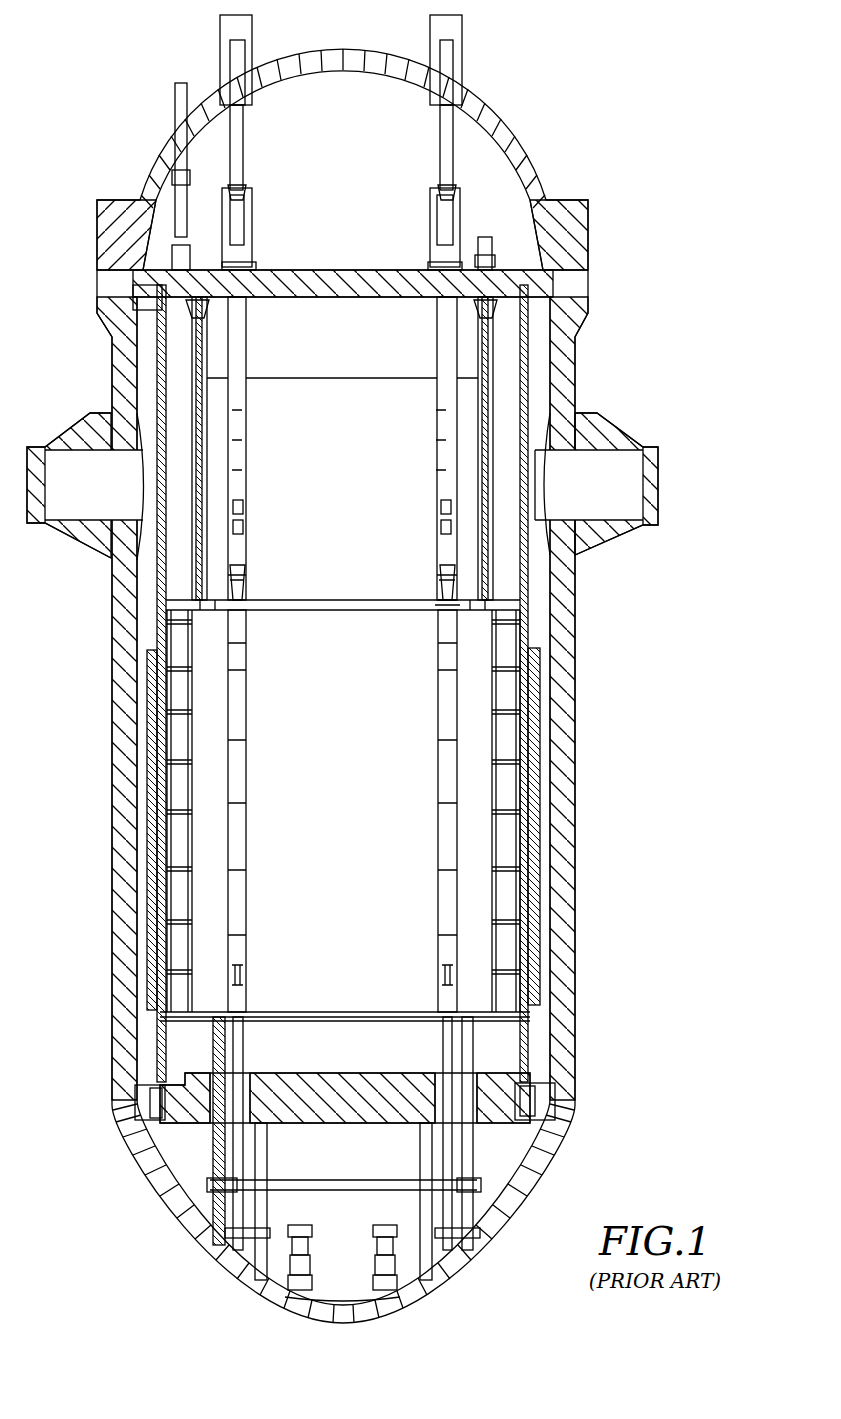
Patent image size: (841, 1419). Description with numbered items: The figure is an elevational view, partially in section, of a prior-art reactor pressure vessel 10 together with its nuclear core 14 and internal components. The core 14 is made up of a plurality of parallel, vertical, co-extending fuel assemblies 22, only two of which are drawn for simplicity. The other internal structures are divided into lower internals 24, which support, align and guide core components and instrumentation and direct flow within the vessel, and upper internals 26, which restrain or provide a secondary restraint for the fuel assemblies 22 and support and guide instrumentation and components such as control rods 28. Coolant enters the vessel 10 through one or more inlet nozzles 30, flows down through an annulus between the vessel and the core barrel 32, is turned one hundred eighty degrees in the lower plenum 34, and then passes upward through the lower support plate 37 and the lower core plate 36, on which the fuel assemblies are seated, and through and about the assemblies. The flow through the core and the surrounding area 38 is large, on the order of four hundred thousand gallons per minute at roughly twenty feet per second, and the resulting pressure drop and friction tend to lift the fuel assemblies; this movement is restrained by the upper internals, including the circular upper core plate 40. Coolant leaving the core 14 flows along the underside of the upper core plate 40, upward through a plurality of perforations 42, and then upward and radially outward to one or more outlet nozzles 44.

The reactor pressure vessel 10 is at (577, 677).
The nuclear core 14 is at (320, 797).
The fuel assemblies 22 is at (247, 697).
The lower internals 24 is at (315, 1054).
The upper internals 26 is at (322, 459).
The control rods 28 is at (436, 607).
The inlet nozzles 30 is at (72, 420).
The core barrel 32 is at (152, 600).
The lower plenum 34 is at (510, 1173).
The lower core plate 36 is at (397, 1006).
The lower support plate 37 is at (362, 1120).
The surrounding area 38 is at (402, 790).
The upper core plate 40 is at (352, 612).
The perforations 42 is at (305, 600).
The outlet nozzles 44 is at (618, 426).